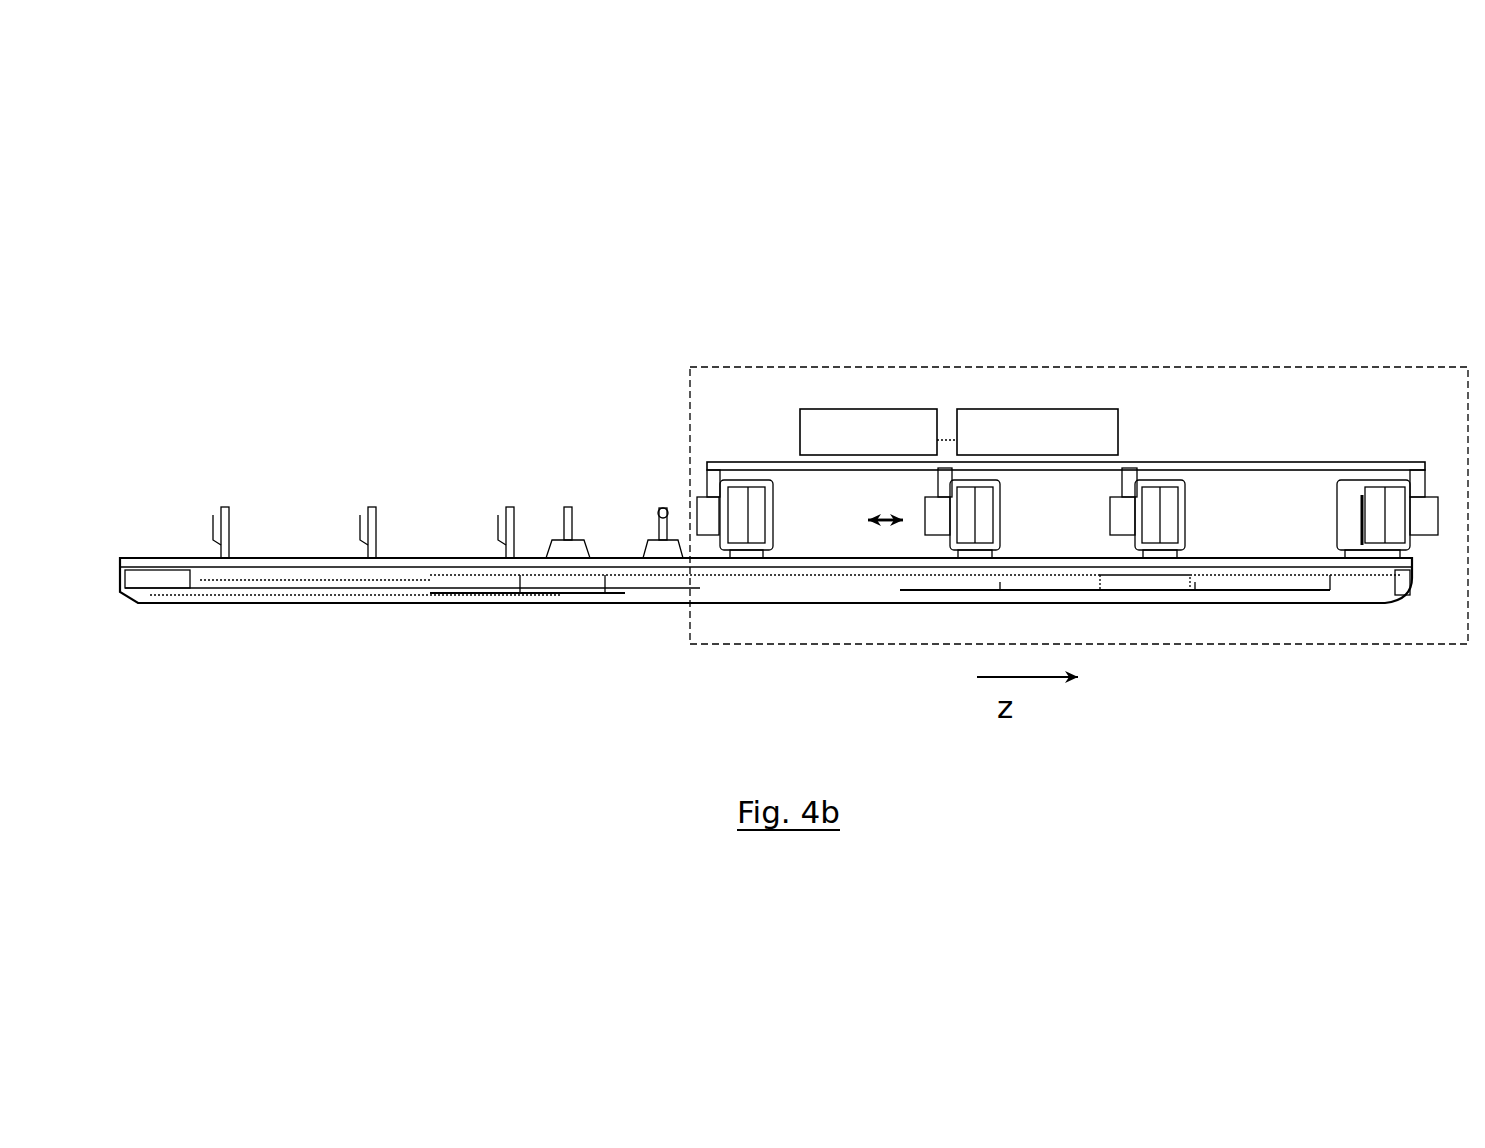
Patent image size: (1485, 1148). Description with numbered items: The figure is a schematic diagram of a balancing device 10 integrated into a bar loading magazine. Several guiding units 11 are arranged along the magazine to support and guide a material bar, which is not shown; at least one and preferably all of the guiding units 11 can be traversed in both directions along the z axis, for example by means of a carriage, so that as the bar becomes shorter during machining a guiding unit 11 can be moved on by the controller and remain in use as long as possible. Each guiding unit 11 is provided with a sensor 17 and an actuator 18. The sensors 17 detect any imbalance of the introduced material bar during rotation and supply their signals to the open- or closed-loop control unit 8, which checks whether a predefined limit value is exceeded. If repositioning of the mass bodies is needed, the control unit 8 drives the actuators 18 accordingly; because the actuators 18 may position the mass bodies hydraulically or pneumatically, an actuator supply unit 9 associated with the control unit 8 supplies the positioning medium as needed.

The open- or closed-loop control unit 8 is at (1042, 440).
The actuator supply unit 9 is at (851, 430).
The balancing device 10 is at (895, 366).
The guiding unit 11 is at (745, 525).
The sensor 17 is at (702, 468).
The actuator 18 is at (688, 498).